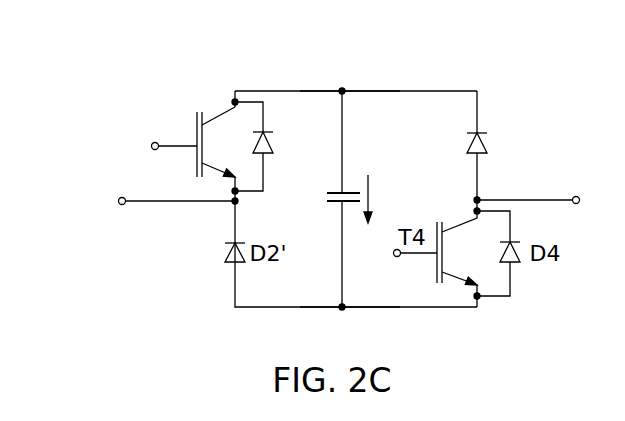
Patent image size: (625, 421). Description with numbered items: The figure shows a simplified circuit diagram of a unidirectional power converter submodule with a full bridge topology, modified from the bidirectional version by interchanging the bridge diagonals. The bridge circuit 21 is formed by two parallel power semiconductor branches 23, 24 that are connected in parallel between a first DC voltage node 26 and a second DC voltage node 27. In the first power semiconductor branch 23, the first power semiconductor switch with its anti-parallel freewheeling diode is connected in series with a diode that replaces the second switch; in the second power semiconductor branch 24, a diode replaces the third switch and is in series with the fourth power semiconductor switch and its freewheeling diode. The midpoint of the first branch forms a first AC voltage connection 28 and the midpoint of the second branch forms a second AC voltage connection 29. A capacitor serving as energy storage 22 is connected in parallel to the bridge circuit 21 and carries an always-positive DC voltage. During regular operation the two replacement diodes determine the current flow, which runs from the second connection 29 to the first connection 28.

The bridge circuit 21 is at (208, 86).
The first power semiconductor branch 23 is at (276, 122).
The first DC voltage node 26 is at (342, 90).
The capacitor 22 is at (350, 190).
The second DC voltage node 27 is at (343, 311).
The second power semiconductor branch 24 is at (451, 104).
The first AC voltage connection 28 is at (135, 201).
The second AC voltage connection 29 is at (568, 198).